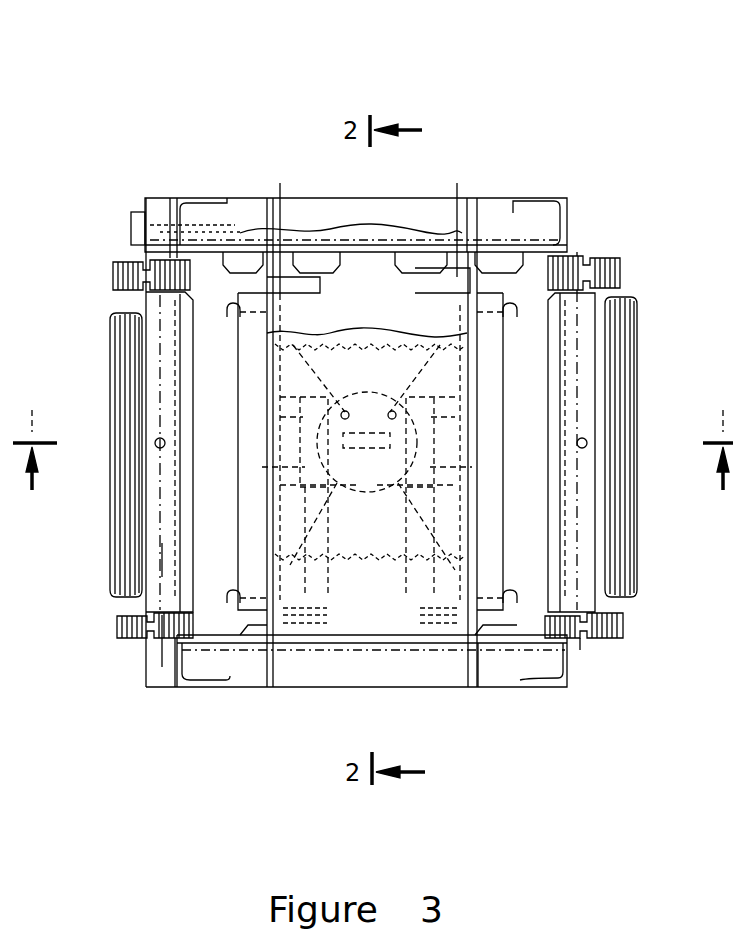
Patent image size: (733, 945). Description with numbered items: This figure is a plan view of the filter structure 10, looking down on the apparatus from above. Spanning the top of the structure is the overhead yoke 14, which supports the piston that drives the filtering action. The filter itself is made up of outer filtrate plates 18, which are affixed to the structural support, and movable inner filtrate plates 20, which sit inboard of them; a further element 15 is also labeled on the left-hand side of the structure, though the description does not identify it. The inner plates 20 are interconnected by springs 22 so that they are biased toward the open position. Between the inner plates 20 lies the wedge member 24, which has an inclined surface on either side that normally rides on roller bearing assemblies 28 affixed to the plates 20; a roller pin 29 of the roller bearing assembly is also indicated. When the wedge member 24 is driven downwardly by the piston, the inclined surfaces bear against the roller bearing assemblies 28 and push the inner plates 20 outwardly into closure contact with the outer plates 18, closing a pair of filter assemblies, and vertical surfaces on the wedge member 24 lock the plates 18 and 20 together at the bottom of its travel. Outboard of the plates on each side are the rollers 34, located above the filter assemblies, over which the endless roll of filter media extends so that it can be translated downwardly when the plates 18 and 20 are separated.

The filter structure 10 is at (600, 99).
The overhead yoke 14 is at (500, 205).
The left clamp bar 15 is at (195, 322).
The outer filtrate plates 18 is at (546, 320).
The movable inner filtrate plates 20 is at (237, 413).
The springs 22 is at (396, 323).
The wedge member 24 is at (367, 452).
The roller bearing assemblies 28 is at (300, 467).
The roller pin 29 is at (437, 405).
The rollers 34 is at (105, 352).